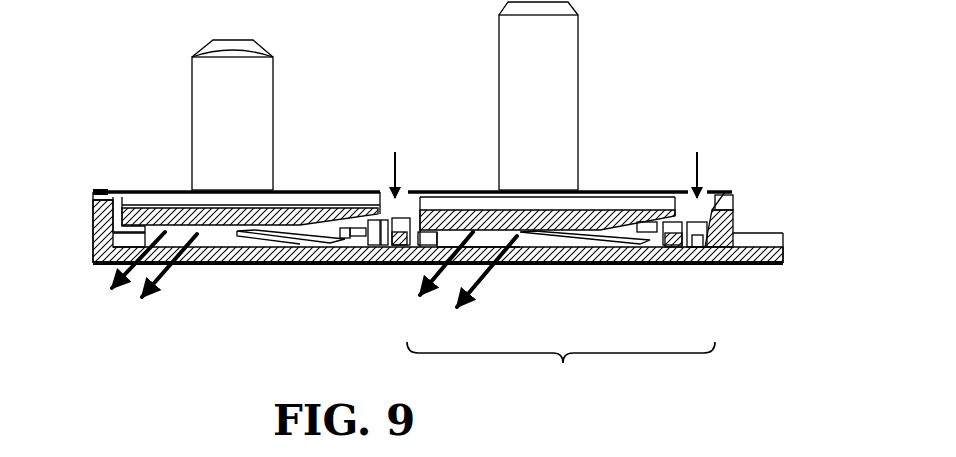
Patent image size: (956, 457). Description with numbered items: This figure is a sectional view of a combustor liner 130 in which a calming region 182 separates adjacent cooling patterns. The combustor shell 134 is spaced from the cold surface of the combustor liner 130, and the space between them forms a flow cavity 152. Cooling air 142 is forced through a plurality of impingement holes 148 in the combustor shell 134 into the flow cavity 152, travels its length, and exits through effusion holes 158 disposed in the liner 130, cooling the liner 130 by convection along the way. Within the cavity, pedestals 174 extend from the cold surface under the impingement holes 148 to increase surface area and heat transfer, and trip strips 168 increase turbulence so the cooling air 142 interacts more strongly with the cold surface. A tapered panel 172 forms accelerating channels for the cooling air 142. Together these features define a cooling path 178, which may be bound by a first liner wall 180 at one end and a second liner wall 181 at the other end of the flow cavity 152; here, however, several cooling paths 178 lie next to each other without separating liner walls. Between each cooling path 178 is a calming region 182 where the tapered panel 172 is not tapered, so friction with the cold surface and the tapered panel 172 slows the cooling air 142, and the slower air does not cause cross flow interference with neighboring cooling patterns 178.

The combustor liner 130 is at (260, 267).
The combustor shell 134 is at (333, 190).
The cooling air 142 is at (702, 162).
The impingement holes 148 is at (733, 198).
The flow cavity 152 is at (243, 233).
The effusion holes 158 is at (530, 270).
The trip strip 168 is at (312, 265).
The tapered panel 172 is at (580, 212).
The pedestals 174 is at (402, 265).
The cooling path 178 is at (561, 367).
The first liner wall 180 is at (737, 233).
The second liner wall 181 is at (90, 260).
The calming region 182 is at (138, 232).